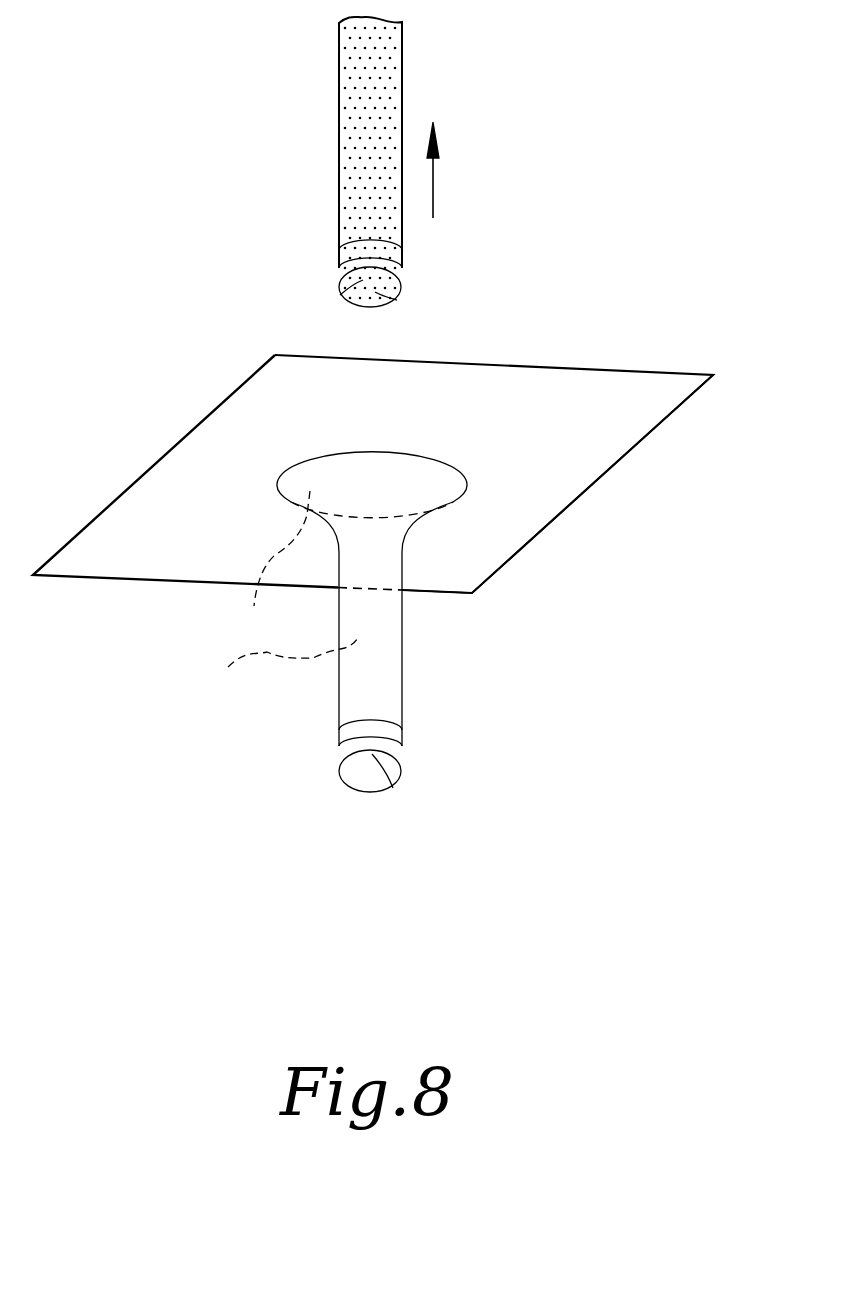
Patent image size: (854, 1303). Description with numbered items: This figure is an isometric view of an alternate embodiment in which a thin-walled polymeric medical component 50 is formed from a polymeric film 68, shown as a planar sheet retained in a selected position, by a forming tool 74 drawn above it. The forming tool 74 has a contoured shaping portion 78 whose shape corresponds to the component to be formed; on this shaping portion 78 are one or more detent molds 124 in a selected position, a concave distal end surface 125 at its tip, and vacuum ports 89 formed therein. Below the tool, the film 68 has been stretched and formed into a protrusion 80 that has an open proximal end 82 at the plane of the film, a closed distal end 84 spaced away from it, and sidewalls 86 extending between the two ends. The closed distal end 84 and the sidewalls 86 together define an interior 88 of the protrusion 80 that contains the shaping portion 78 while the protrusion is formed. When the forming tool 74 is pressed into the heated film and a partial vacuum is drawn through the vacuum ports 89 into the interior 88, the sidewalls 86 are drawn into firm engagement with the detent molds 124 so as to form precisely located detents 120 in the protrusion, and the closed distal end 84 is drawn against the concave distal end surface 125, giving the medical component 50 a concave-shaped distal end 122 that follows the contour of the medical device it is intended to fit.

The thin-walled polymeric medical component 50 is at (312, 774).
The polymeric film 68 is at (640, 395).
The forming tool 74 is at (338, 72).
The shaping portion 78 is at (378, 102).
The protrusion 80 is at (401, 622).
The open proximal end 82 is at (349, 547).
The closed distal end 84 is at (365, 775).
The sidewalls 86 is at (338, 688).
The interior 88 is at (274, 662).
The vacuum ports 89 is at (363, 173).
The detents 120 is at (399, 738).
The concave-shaped distal end 122 is at (392, 787).
The detent molds 124 is at (395, 253).
The concave distal end surface 125 is at (395, 302).